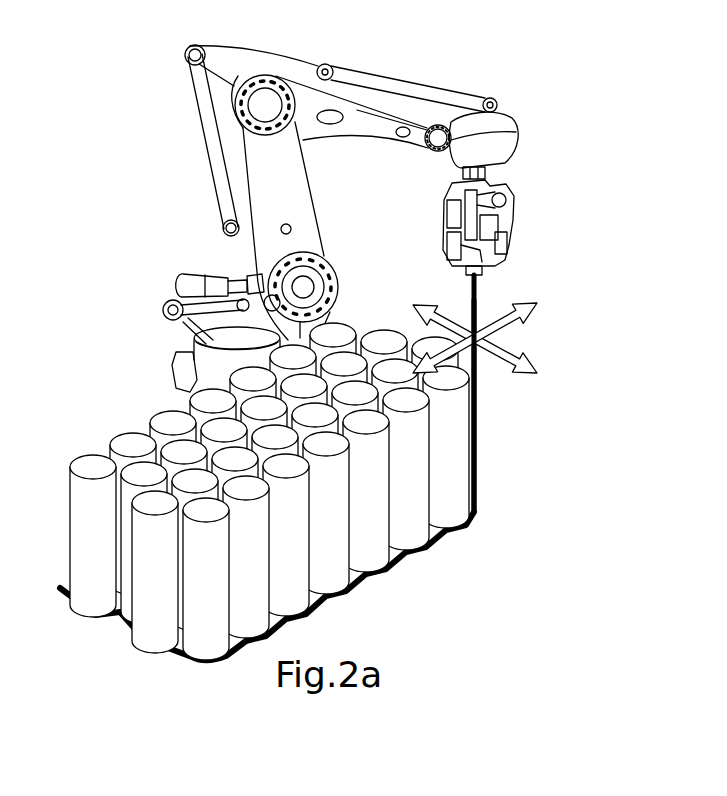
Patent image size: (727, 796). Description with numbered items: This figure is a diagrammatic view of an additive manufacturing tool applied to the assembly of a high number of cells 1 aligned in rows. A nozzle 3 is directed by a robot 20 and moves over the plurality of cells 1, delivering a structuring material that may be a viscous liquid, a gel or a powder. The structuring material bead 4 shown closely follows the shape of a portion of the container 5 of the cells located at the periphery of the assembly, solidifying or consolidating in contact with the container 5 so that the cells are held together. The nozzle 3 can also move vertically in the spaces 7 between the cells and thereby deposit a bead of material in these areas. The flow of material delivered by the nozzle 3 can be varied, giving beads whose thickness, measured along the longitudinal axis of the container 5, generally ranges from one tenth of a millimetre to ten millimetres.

The robot 20 is at (373, 110).
The nozzle 3 is at (481, 268).
The cell 1 is at (93, 467).
The space between the cells 7 is at (163, 437).
The container 5 is at (458, 473).
The structuring material bead 4 is at (410, 545).